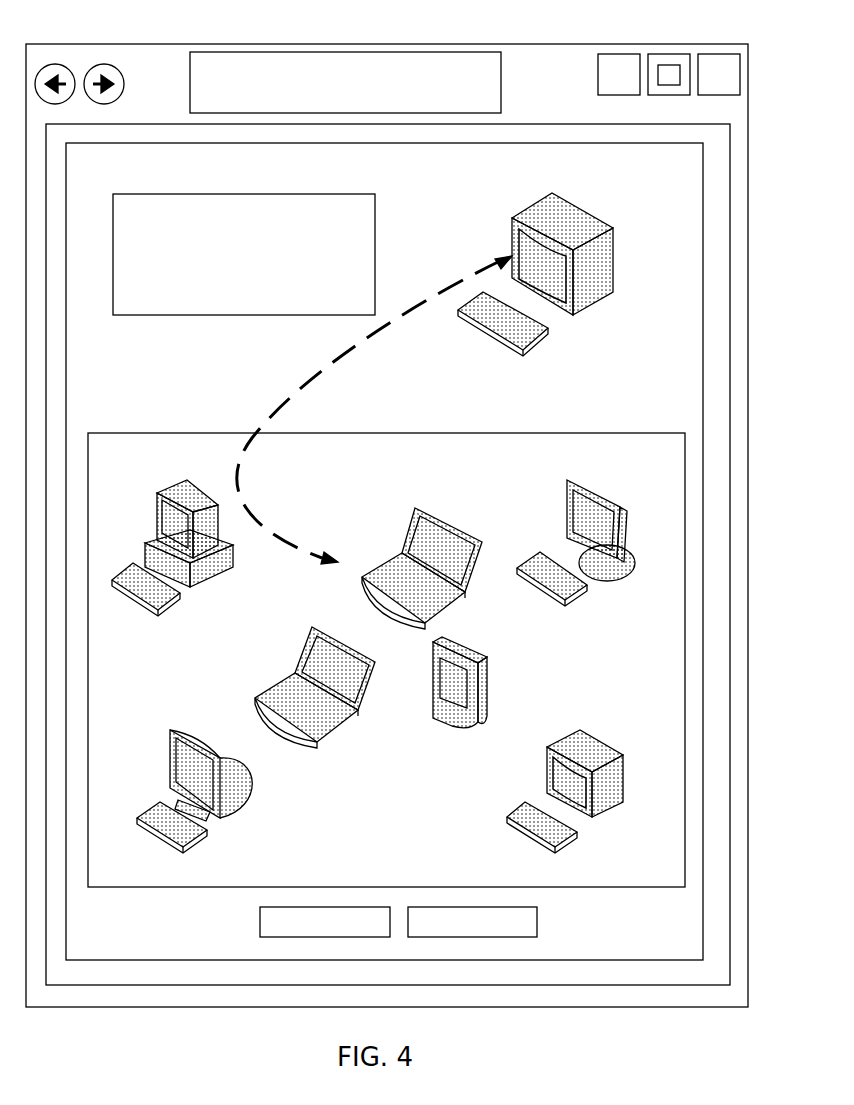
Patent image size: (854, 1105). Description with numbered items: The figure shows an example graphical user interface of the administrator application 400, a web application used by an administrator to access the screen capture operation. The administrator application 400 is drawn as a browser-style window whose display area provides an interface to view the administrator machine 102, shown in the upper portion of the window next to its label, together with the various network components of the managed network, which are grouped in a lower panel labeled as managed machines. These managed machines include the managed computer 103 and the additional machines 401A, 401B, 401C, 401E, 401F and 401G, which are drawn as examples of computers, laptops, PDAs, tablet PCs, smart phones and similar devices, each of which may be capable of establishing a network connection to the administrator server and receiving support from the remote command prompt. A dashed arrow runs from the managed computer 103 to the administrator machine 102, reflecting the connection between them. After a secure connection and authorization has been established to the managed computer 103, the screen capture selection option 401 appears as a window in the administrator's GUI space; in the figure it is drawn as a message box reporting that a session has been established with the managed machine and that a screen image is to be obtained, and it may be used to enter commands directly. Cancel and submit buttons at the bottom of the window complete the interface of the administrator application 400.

The administrator application 400 is at (472, 95).
The screen capture selection option 401 is at (377, 223).
The administrator machine 102 is at (603, 220).
The managed computer 103 is at (413, 568).
The managed machine 401A is at (180, 549).
The managed machine 401B is at (206, 792).
The managed machine 401C is at (319, 699).
The managed machine 401E is at (491, 682).
The managed machine 401F is at (581, 551).
The managed machine 401G is at (577, 792).